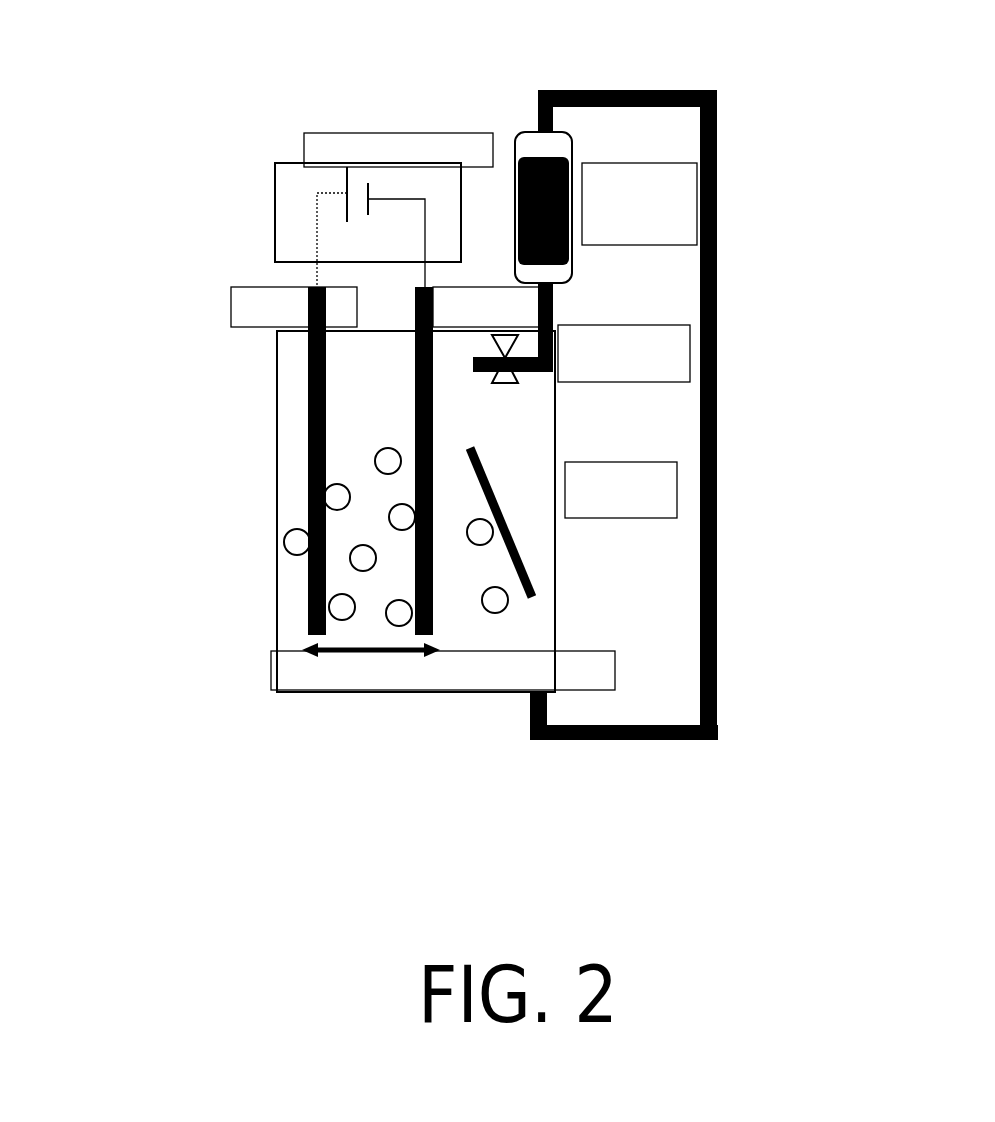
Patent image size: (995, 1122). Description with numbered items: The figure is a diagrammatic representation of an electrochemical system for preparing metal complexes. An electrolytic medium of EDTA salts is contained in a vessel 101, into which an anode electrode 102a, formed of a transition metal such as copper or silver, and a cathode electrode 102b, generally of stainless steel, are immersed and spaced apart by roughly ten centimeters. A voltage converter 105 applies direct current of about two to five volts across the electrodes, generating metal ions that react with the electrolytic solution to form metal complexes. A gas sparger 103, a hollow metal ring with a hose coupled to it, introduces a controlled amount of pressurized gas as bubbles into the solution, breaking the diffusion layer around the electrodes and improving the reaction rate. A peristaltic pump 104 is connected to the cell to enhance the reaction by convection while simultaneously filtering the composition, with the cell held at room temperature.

The vessel 101 is at (273, 601).
The anode electrode 102a is at (232, 303).
The cathode electrode 102b is at (527, 305).
The gas sparger 103 is at (717, 457).
The peristaltic pump 104 is at (520, 132).
The voltage converter 105 is at (305, 134).